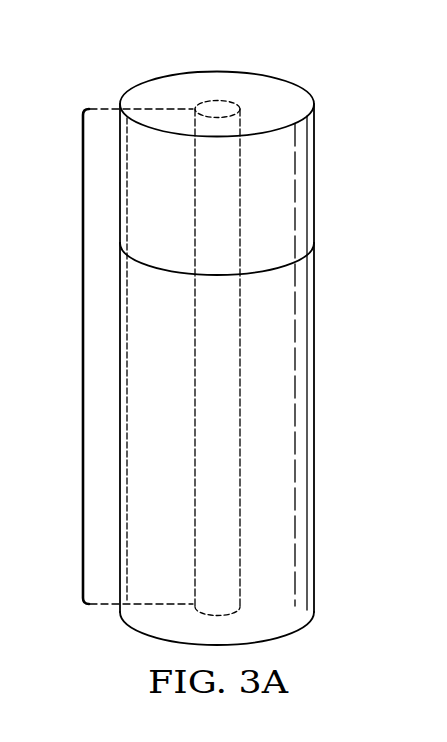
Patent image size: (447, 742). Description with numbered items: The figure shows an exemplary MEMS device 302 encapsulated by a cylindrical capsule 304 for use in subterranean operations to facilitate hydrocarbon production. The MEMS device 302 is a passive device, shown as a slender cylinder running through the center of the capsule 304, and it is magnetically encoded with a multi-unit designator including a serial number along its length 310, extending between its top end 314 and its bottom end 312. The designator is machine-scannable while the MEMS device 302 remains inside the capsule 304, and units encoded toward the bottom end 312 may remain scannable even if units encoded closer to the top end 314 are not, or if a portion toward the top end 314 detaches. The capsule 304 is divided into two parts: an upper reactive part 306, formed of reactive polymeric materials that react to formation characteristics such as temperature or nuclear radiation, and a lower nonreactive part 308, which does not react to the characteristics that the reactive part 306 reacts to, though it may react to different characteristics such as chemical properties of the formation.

The MEMS device 302 is at (287, 318).
The cylindrical capsule 304 is at (272, 332).
The reactive part 306 is at (315, 158).
The nonreactive part 308 is at (315, 415).
The length 310 is at (83, 352).
The bottom end 312 is at (242, 617).
The top end 314 is at (223, 98).